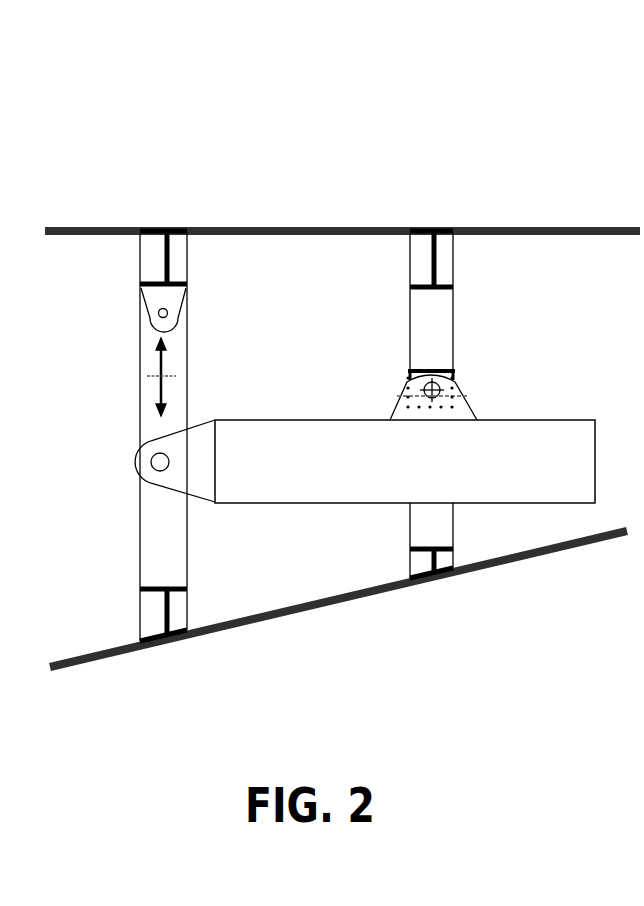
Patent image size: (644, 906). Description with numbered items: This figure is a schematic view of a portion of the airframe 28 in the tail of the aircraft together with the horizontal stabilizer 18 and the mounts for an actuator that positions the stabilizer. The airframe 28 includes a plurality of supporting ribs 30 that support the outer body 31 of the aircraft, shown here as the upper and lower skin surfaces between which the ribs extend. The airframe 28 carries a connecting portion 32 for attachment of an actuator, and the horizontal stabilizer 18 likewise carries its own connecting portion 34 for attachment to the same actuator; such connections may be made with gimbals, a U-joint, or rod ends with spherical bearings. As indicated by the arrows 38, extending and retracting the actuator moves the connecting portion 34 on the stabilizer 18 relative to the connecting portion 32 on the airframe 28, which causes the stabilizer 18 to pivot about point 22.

The horizontal stabilizer 18 is at (568, 420).
The pivot point 22 is at (438, 388).
The airframe 28 is at (324, 383).
The supporting ribs 30 is at (176, 227).
The outer body 31 is at (310, 227).
The connecting portion 32 is at (143, 293).
The connecting portion 34 is at (165, 488).
The arrows 38 is at (160, 372).